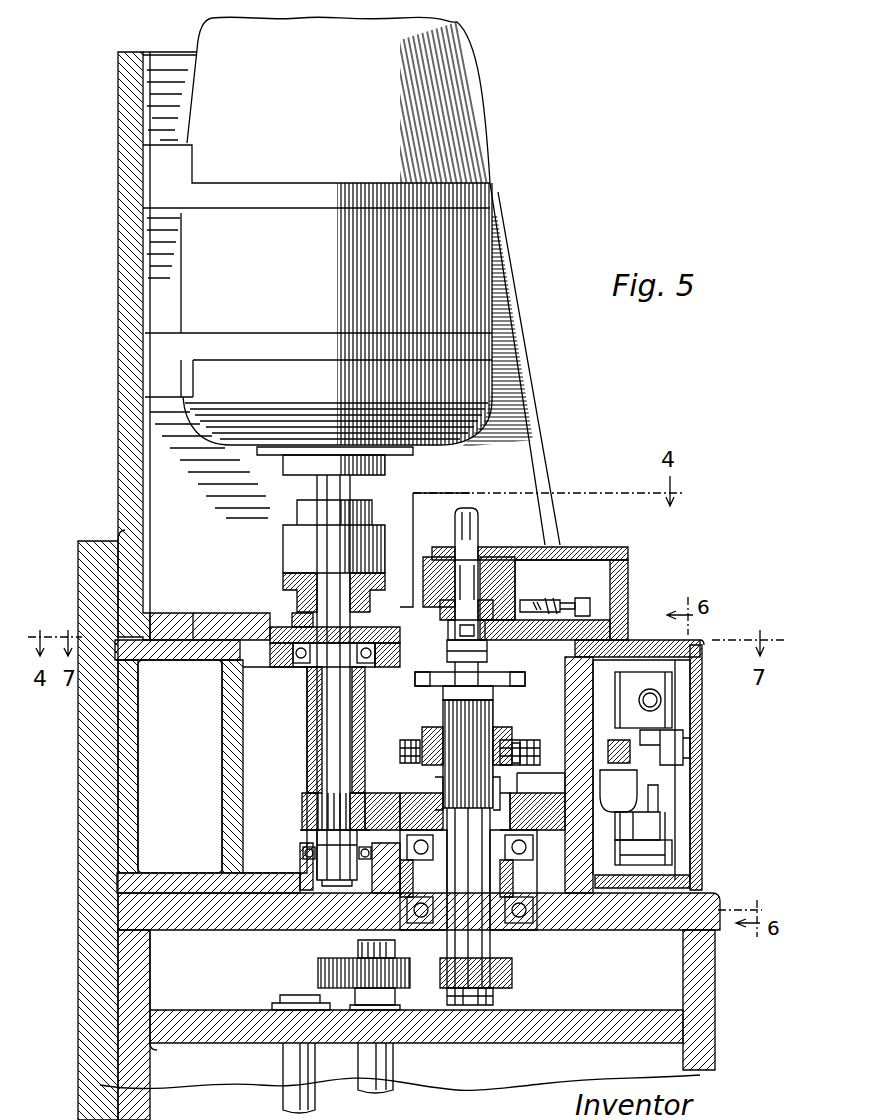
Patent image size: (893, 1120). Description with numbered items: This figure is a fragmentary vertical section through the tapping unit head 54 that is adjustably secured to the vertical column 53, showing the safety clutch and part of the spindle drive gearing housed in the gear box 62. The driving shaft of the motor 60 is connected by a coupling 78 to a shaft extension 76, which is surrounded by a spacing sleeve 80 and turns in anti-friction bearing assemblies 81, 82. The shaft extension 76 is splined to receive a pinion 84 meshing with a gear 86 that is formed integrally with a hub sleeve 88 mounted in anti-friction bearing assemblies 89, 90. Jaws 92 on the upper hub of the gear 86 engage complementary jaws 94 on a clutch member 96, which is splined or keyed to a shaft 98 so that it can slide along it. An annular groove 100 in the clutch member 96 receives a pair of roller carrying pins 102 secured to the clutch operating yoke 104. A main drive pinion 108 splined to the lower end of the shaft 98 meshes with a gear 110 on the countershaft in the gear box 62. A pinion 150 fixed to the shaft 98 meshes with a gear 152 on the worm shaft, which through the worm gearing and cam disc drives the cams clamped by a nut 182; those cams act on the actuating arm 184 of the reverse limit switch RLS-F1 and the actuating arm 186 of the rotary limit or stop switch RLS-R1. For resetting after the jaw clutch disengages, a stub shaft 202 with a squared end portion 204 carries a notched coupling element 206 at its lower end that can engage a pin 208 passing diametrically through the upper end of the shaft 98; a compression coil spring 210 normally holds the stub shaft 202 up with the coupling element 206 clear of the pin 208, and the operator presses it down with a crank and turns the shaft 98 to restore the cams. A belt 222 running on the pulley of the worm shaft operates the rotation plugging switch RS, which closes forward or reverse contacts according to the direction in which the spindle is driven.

The vertical column 53 is at (88, 1075).
The tapping unit head 54 is at (532, 309).
The motor 60 is at (486, 143).
The gear box 62 is at (715, 1020).
The shaft extension 76 is at (327, 731).
The coupling 78 is at (388, 553).
The spacing sleeve 80 is at (310, 709).
The anti-friction bearing assembly 81 is at (361, 663).
The anti-friction bearing assembly 82 is at (312, 878).
The pinion 84 is at (302, 797).
The gear 86 is at (400, 752).
The hub sleeve 88 is at (544, 928).
The anti-friction bearing assembly 89 is at (400, 839).
The anti-friction bearing assembly 90 is at (418, 928).
The jaws 92 is at (377, 776).
The complementary jaws 94 is at (512, 787).
The clutch member 96 is at (473, 733).
The shaft 98 is at (447, 710).
The annular groove 100 is at (527, 733).
The roller carrying pins 102 is at (541, 753).
The clutch operating yoke 104 is at (527, 745).
The main drive pinion 108 is at (505, 978).
The gear 110 is at (318, 978).
The pinion 150 is at (493, 690).
The gear 152 is at (523, 679).
The nut 182 is at (687, 749).
The actuating arm 184 is at (692, 731).
The actuating arm 186 is at (658, 817).
The stub shaft 202 is at (456, 510).
The squared end portion 204 is at (470, 509).
The notched coupling element 206 is at (516, 541).
The pin 208 is at (470, 651).
The compression coil spring 210 is at (423, 583).
The belt 222 is at (529, 604).
The rotation plugging switch RS is at (572, 612).
The reverse limit switch RLS-F1 is at (660, 683).
The rotary limit or stop switch RLS-R1 is at (660, 853).